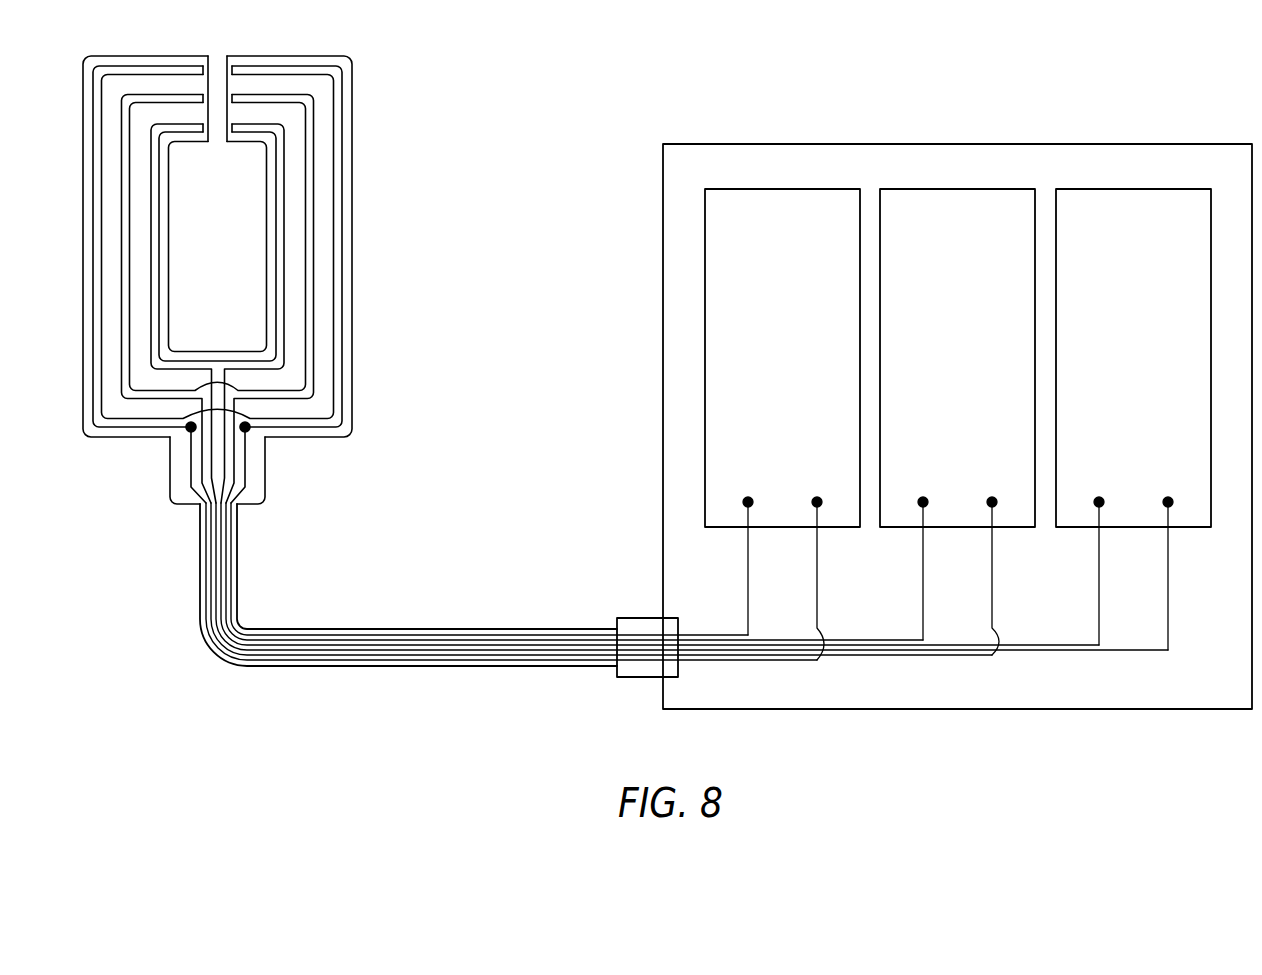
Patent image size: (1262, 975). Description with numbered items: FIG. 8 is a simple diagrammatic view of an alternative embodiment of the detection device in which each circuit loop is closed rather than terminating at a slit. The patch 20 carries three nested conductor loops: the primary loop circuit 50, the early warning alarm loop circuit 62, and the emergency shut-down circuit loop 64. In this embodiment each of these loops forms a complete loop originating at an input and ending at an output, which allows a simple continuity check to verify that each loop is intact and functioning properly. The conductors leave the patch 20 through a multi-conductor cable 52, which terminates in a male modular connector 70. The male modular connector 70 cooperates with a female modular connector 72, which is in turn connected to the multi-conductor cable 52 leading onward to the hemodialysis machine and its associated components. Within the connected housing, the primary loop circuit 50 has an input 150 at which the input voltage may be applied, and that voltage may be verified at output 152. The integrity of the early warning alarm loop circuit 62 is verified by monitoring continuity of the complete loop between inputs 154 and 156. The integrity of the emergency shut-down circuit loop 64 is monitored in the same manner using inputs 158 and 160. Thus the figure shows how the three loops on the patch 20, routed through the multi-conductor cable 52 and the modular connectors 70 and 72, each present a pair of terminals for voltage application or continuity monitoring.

The primary loop circuit 50 is at (283, 165).
The early warning alarm loop circuit 62 is at (312, 237).
The emergency shut-down circuit loop 64 is at (343, 317).
The patch 20 is at (255, 468).
The multi-conductor cable 52 is at (393, 628).
The male modular connector 70 is at (623, 677).
The female modular connector 72 is at (653, 677).
The input 150 is at (1121, 478).
The output 152 is at (1190, 478).
The input 154 is at (945, 478).
The input 156 is at (1014, 478).
The input 158 is at (770, 478).
The input 160 is at (839, 478).